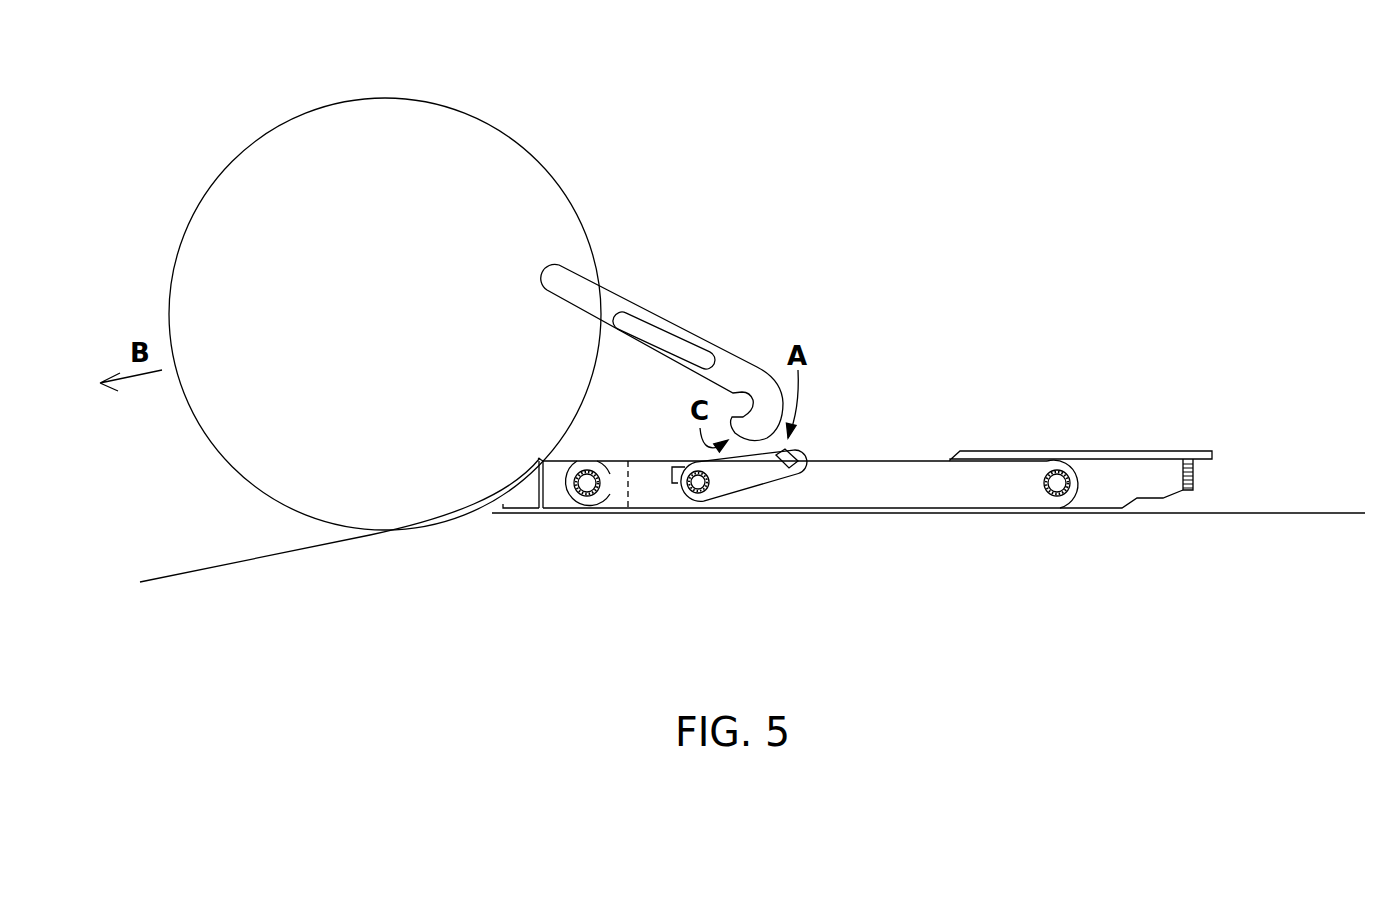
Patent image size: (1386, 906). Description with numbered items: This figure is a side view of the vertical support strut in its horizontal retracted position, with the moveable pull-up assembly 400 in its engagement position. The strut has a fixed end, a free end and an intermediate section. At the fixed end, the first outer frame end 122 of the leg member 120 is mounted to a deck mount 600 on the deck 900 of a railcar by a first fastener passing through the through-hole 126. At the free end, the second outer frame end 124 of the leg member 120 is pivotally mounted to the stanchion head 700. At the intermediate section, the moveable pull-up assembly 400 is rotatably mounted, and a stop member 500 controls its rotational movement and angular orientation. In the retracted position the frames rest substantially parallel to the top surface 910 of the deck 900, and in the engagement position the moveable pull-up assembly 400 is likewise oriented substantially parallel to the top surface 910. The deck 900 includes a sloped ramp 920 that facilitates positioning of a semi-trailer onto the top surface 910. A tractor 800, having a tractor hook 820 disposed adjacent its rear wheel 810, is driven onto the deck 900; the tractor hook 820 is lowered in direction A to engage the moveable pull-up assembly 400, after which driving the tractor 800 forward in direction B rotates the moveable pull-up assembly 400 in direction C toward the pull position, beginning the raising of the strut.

The tractor 800 is at (245, 127).
The rear wheel 810 is at (412, 247).
The tractor hook 820 is at (677, 312).
The moveable pull-up assembly 400 is at (802, 449).
The leg member 120 is at (927, 478).
The deck mount 600 is at (554, 502).
The first outer frame end 122 is at (588, 498).
The through-hole 126 is at (602, 498).
The stop member 500 is at (674, 485).
The second outer frame end 124 is at (1057, 495).
The stanchion head 700 is at (1110, 490).
The deck 900 is at (1245, 567).
The top surface 910 is at (1303, 513).
The sloped ramp 920 is at (225, 563).